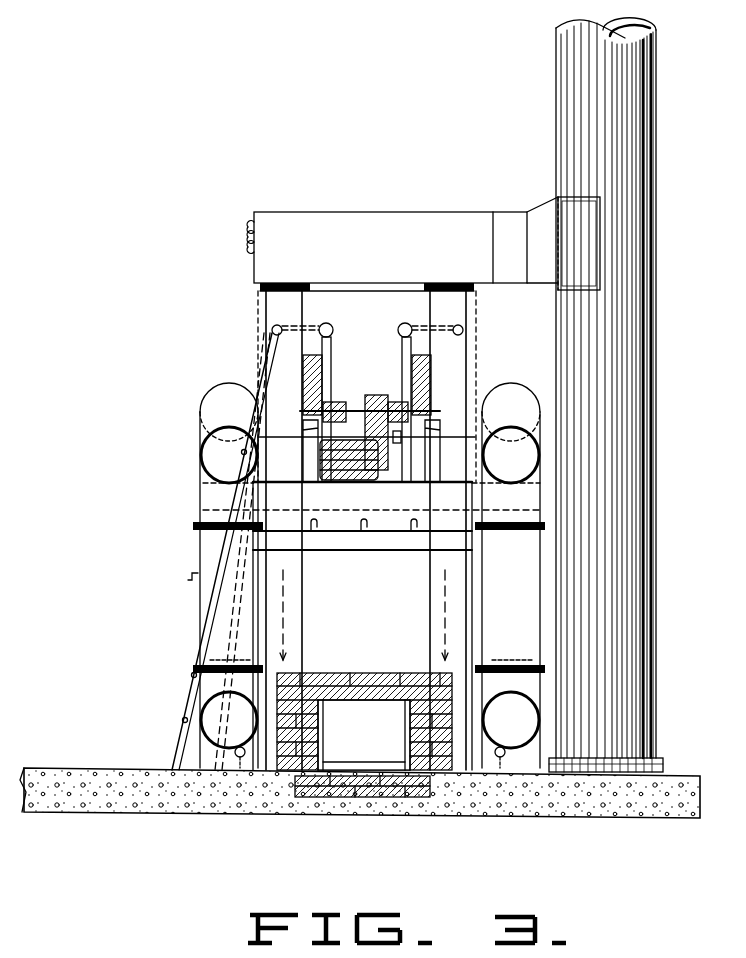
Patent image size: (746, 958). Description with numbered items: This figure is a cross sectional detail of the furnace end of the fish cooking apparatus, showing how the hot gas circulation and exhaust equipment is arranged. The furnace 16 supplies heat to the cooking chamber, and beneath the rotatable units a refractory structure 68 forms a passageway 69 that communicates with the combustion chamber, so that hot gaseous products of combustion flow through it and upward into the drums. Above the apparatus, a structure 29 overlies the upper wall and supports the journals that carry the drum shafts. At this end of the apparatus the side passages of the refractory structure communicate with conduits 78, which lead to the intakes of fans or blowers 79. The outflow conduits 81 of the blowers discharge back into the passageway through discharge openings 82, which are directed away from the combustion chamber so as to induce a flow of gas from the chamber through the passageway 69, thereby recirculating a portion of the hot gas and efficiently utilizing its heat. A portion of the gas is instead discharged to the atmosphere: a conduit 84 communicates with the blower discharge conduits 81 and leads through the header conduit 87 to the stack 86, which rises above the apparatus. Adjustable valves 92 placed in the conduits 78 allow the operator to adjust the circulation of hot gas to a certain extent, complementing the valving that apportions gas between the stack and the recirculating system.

The furnace 16 is at (370, 612).
The structure 29 is at (365, 504).
The refractory structure 68 is at (362, 798).
The passageway 69 is at (362, 745).
The conduits 78 is at (232, 383).
The fans or blowers 79 is at (418, 372).
The outflow conduits 81 is at (308, 482).
The discharge openings 82 is at (405, 712).
The conduit 84 is at (303, 305).
The stack 86 is at (657, 97).
The header conduit 87 is at (372, 212).
The adjustable valves 92 is at (190, 580).